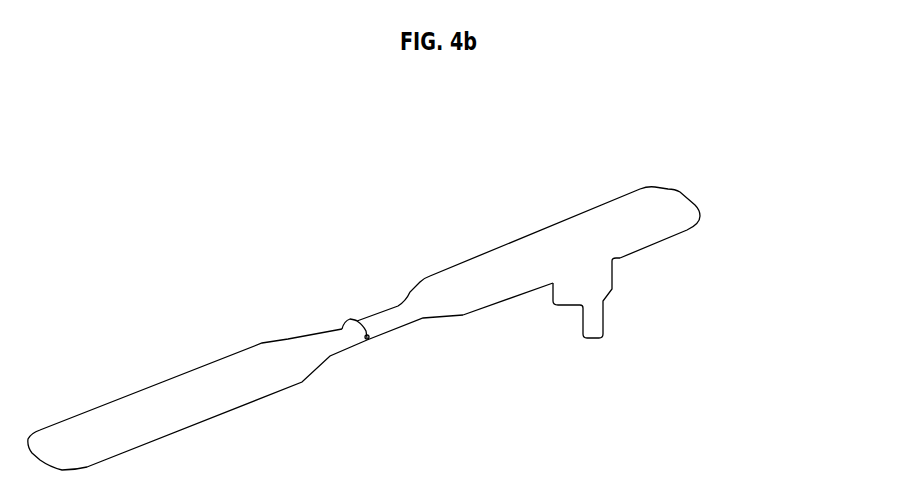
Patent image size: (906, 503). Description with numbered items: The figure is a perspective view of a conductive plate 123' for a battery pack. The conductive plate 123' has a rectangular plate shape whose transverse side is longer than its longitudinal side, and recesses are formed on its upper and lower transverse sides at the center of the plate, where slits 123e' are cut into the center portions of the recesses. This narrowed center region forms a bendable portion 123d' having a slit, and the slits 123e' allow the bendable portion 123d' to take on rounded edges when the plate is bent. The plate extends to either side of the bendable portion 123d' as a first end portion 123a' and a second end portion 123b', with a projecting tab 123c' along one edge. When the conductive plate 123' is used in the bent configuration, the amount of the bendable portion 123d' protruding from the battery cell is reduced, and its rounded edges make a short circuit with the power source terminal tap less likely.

The conductive plate 123' is at (435, 278).
The upper plate portion 123a' is at (564, 243).
The lower plate portion 123b' is at (197, 395).
The connection tab 123c' is at (655, 303).
The bendable portion 123d' is at (352, 296).
The slits 123e' is at (367, 387).